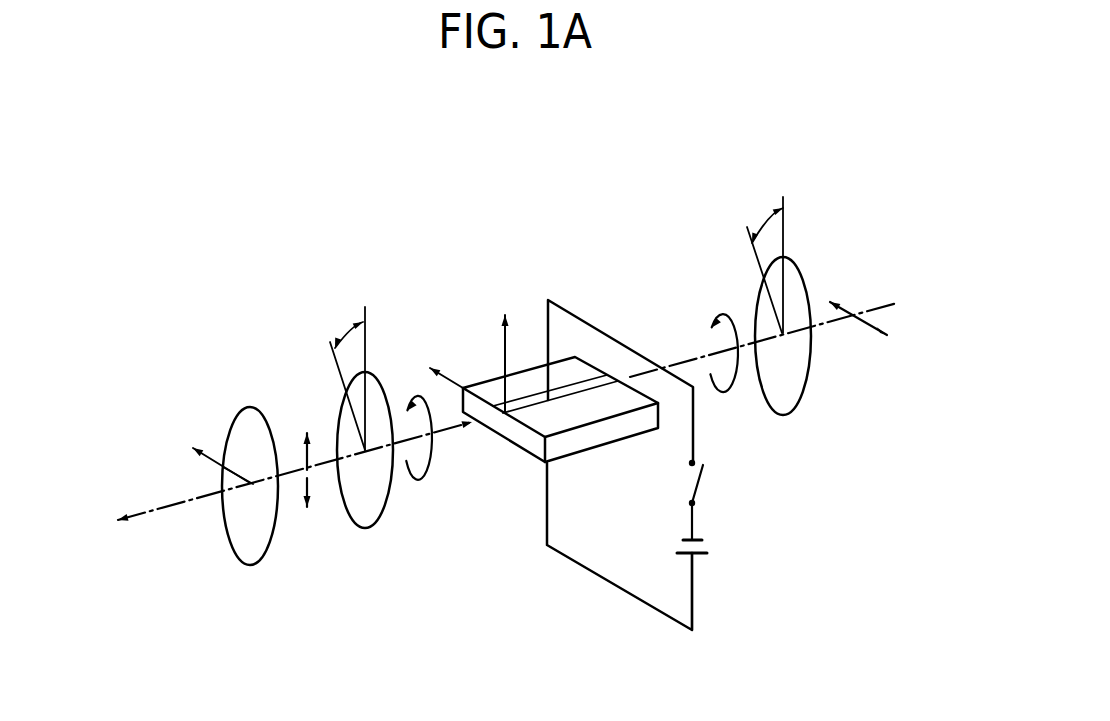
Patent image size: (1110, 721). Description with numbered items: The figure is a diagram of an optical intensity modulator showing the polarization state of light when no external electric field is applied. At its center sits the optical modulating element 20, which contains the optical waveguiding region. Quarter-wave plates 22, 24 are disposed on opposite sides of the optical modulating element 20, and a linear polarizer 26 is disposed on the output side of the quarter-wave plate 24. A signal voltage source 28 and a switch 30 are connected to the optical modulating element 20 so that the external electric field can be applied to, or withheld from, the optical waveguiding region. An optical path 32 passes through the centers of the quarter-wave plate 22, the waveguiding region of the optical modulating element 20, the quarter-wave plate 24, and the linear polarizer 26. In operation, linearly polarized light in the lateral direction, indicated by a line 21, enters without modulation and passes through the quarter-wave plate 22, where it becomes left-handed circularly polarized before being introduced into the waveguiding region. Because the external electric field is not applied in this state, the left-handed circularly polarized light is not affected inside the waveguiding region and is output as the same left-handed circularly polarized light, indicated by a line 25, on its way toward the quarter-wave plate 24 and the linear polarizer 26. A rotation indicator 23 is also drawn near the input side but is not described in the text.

The optical modulating element 20 is at (522, 368).
The line indicating linearly polarized light 21 is at (862, 327).
The quarter-wave plate 22 is at (790, 410).
The polarization rotation indicator 23 is at (727, 317).
The quarter-wave plate 24 is at (372, 523).
The line indicating left-handed circularly polarized light 25 is at (420, 478).
The linear polarizer 26 is at (267, 547).
The signal voltage source 28 is at (708, 547).
The switch 30 is at (698, 483).
The optical path 32 is at (687, 362).